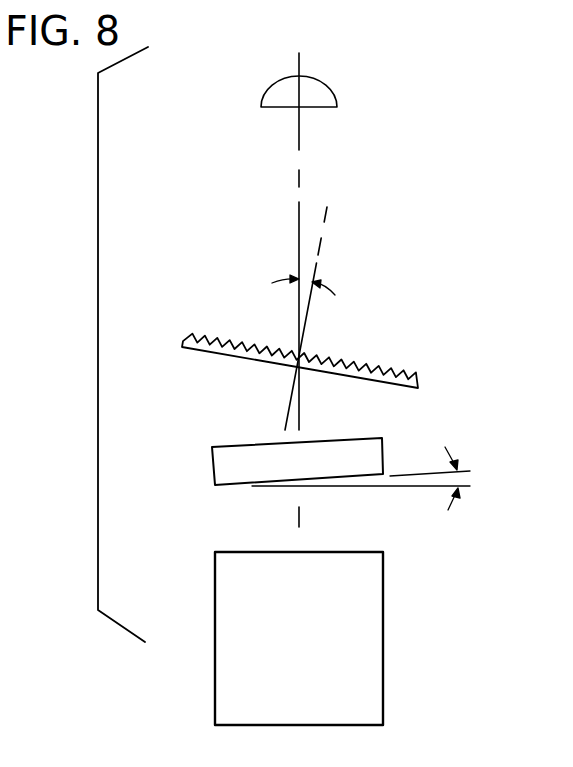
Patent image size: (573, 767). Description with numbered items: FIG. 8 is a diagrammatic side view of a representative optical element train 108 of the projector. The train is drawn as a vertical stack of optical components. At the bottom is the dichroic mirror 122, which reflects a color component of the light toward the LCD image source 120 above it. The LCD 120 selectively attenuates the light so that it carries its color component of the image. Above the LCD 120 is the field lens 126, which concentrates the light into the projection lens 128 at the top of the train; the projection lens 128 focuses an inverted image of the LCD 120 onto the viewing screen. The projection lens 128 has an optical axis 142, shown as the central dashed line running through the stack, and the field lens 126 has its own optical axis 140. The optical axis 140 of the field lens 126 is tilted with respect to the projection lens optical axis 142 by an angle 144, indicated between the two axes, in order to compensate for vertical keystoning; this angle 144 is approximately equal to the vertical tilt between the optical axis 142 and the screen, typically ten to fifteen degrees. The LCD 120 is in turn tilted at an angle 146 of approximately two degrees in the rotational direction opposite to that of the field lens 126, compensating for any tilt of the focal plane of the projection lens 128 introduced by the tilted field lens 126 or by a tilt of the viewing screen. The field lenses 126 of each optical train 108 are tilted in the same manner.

The optical element train 108 is at (186, 146).
The projection lens 128 is at (330, 90).
The projection lens optical axis 142 is at (300, 134).
The field lens optical axis 140 is at (327, 217).
The angle 144 is at (313, 273).
The field lens 126 is at (385, 368).
The LCD image source 120 is at (383, 450).
The angle 146 is at (462, 480).
The dichroic mirror 122 is at (383, 677).